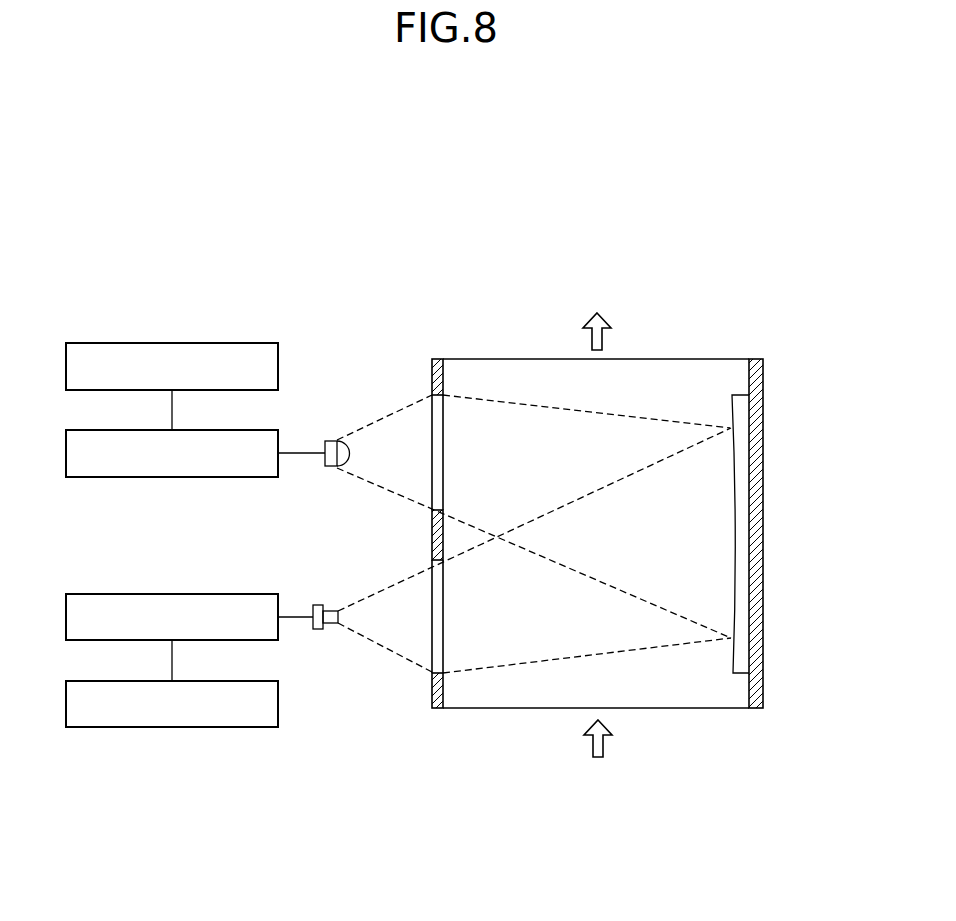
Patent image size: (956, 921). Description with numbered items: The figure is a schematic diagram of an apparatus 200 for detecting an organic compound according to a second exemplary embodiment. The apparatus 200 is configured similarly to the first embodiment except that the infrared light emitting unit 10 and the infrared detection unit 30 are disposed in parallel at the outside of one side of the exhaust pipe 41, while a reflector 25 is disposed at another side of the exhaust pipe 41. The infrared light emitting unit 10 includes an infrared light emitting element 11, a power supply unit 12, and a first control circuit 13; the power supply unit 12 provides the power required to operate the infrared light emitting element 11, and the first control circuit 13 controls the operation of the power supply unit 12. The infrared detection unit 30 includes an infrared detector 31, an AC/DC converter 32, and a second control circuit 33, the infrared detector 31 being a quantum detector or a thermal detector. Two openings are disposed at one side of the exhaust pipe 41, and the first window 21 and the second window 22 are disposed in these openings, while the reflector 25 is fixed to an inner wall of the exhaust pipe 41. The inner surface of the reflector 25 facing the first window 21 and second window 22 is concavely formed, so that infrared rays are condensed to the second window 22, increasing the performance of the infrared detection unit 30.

The apparatus for detecting an organic compound 200 is at (327, 263).
The infrared light emitting unit 10 is at (312, 380).
The infrared light emitting element 11 is at (330, 440).
The power supply unit 12 is at (137, 477).
The first control circuit 13 is at (135, 342).
The first window 21 is at (438, 425).
The second window 22 is at (438, 645).
The reflector 25 is at (746, 528).
The infrared detection unit 30 is at (314, 692).
The infrared detector 31 is at (317, 604).
The AC/DC converter 32 is at (202, 593).
The second control circuit 33 is at (203, 728).
The exhaust pipe 41 is at (762, 427).